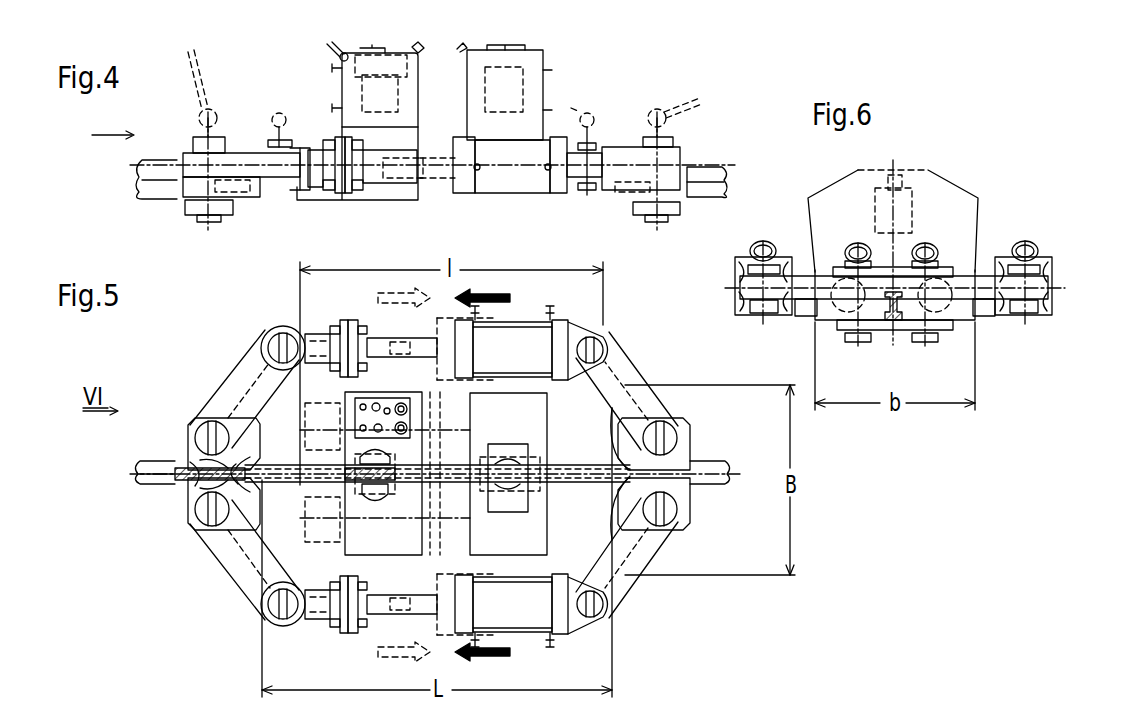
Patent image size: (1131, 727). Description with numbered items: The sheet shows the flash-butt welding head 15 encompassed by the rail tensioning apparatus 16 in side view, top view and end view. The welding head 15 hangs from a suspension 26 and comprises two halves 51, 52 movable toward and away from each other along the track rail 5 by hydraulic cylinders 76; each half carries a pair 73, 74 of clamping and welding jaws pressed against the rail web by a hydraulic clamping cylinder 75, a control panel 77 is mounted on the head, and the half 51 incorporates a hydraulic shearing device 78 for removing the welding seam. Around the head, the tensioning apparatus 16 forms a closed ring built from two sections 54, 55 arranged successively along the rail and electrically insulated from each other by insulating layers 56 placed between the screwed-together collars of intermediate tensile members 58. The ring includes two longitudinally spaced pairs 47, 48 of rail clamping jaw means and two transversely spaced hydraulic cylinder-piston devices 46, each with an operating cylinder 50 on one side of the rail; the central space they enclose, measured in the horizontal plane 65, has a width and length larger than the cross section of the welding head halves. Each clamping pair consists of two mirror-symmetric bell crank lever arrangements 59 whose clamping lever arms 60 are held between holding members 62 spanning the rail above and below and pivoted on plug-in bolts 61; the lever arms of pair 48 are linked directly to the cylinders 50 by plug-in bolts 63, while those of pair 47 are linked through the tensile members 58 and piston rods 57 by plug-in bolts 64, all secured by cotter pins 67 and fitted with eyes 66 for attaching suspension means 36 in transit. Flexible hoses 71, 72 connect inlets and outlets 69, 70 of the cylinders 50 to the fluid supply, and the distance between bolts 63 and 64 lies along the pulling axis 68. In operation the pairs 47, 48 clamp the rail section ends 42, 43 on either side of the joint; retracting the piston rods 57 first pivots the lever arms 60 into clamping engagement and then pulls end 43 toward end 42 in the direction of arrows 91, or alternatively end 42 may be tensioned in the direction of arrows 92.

In FIG. 4, the track rail 5 is at (705, 187).
In FIG. 6, the track rail 5 is at (1050, 282).
In FIG. 4, the flash-butt welding head 15 is at (548, 50).
In FIG. 6, the flash-butt welding head 15 is at (932, 165).
In FIG. 4, the rail tensioning apparatus 16 is at (612, 150).
In FIG. 6, the rail tensioning apparatus 16 is at (980, 328).
In FIG. 4, the suspension 26 is at (422, 51).
In FIG. 4, the suspension means 36 is at (200, 78).
In FIG. 5, the rail section end 42 is at (168, 485).
In FIG. 5, the rail section end 43 is at (720, 480).
In FIG. 4, the hydraulic cylinder-piston device 46 is at (563, 197).
In FIG. 5, the pair of rail clamping jaw means 47 is at (255, 430).
In FIG. 6, the pair of rail clamping jaw means 47 is at (805, 318).
In FIG. 5, the pair of rail clamping jaw means 48 is at (612, 445).
In FIG. 4, the operating cylinder 50 is at (516, 183).
In FIG. 5, the operating cylinder 50 is at (545, 342).
In FIG. 4, the welding head half 51 is at (352, 93).
In FIG. 4, the welding head half 52 is at (535, 88).
In FIG. 4, the section of the mechanical structural unit 54 is at (272, 150).
In FIG. 4, the section of the mechanical structural unit 55 is at (674, 163).
In FIG. 4, the electrical insulating layer 56 is at (345, 165).
In FIG. 5, the electrical insulating layer 56 is at (348, 606).
In FIG. 5, the piston rod 57 is at (428, 338).
In FIG. 4, the intermediate tensile member 58 is at (400, 170).
In FIG. 5, the intermediate tensile member 58 is at (313, 332).
In FIG. 5, the bell crank lever arrangement 59 is at (215, 400).
In FIG. 5, the clamping lever arm 60 is at (247, 368).
In FIG. 6, the clamping lever arm 60 is at (978, 290).
In FIG. 5, the plug-in bolt 61 is at (202, 436).
In FIG. 5, the holding member 62 is at (206, 494).
In FIG. 6, the holding member 62 is at (975, 282).
In FIG. 5, the plug-in bolt 63 is at (606, 342).
In FIG. 5, the plug-in bolt 64 is at (270, 342).
In FIG. 6, the plug-in bolt 64 is at (757, 316).
In FIG. 4, the horizontal plane 65 is at (705, 168).
In FIG. 5, the shackle or eye 66 is at (216, 520).
In FIG. 6, the shackle or eye 66 is at (918, 250).
In FIG. 4, the splint or cotter pin 67 is at (218, 216).
In FIG. 6, the splint or cotter pin 67 is at (853, 344).
In FIG. 5, the tensioning or pulling axis 68 is at (376, 338).
In FIG. 4, the connection (inlet/outlet) 69 is at (466, 186).
In FIG. 4, the connection (inlet/outlet) 70 is at (556, 186).
In FIG. 5, the flexible hydraulic fluid hose 71 is at (478, 320).
In FIG. 5, the flexible hydraulic fluid hose 72 is at (548, 312).
In FIG. 5, the pair of clamping and welding jaws 73 is at (358, 505).
In FIG. 5, the pair of clamping and welding jaws 74 is at (516, 458).
In FIG. 4, the hydraulic clamping cylinder 75 is at (515, 90).
In FIG. 5, the hydraulic clamping cylinder 75 is at (358, 462).
In FIG. 6, the hydraulic clamping cylinder 75 is at (880, 220).
In FIG. 5, the hydraulic cylinder 76 is at (310, 447).
In FIG. 6, the hydraulic cylinder 76 is at (840, 290).
In FIG. 5, the control panel 77 is at (382, 398).
In FIG. 4, the hydraulic shearing device 78 is at (418, 170).
In FIG. 5, the arrows (tensioning direction) 91 is at (478, 296).
In FIG. 5, the arrows (alternative tensioning direction) 92 is at (392, 294).